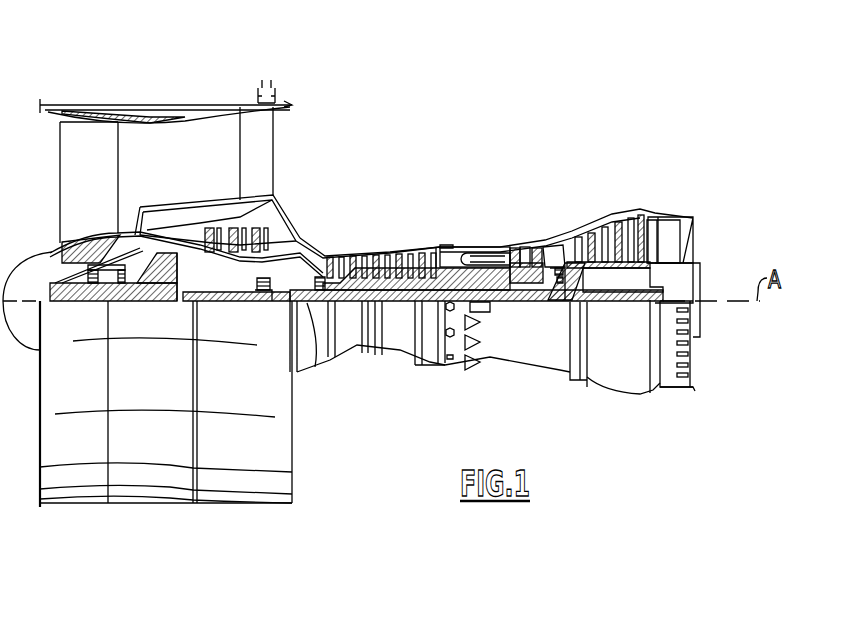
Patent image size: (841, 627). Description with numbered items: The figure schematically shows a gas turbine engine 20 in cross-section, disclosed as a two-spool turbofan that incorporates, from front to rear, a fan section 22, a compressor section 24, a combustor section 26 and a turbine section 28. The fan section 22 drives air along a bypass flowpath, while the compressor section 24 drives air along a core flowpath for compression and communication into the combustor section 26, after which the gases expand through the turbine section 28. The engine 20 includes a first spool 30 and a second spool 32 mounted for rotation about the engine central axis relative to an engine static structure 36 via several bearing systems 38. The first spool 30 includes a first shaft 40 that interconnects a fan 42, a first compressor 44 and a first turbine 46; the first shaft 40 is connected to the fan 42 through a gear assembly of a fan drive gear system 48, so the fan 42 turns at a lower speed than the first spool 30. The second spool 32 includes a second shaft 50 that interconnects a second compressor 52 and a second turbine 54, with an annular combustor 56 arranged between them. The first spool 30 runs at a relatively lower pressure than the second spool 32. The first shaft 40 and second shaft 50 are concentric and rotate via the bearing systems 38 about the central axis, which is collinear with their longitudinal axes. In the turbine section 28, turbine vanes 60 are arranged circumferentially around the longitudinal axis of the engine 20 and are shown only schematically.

The gas turbine engine 20 is at (486, 130).
The fan section 22 is at (117, 102).
The compressor section 24 is at (325, 230).
The combustor section 26 is at (480, 228).
The turbine section 28 is at (582, 205).
The first spool 30 is at (398, 308).
The second spool 32 is at (432, 253).
The engine static structure 36 is at (429, 368).
The bearing systems 38 is at (265, 301).
The first shaft 40 is at (307, 360).
The fan 42 is at (104, 196).
The first compressor 44 is at (273, 200).
The first turbine 46 is at (613, 213).
The fan drive gear system 48 is at (170, 301).
The second shaft 50 is at (480, 293).
The second compressor 52 is at (382, 270).
The second turbine 54 is at (527, 247).
The annular combustor 56 is at (481, 258).
The turbine vanes 60 is at (572, 230).